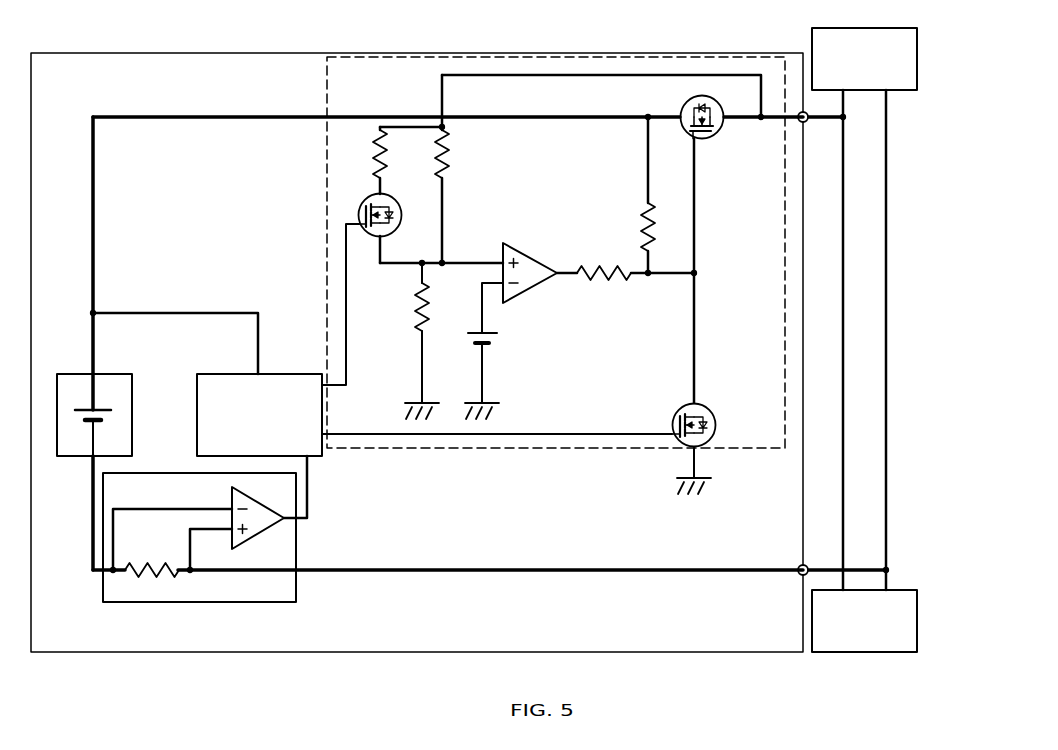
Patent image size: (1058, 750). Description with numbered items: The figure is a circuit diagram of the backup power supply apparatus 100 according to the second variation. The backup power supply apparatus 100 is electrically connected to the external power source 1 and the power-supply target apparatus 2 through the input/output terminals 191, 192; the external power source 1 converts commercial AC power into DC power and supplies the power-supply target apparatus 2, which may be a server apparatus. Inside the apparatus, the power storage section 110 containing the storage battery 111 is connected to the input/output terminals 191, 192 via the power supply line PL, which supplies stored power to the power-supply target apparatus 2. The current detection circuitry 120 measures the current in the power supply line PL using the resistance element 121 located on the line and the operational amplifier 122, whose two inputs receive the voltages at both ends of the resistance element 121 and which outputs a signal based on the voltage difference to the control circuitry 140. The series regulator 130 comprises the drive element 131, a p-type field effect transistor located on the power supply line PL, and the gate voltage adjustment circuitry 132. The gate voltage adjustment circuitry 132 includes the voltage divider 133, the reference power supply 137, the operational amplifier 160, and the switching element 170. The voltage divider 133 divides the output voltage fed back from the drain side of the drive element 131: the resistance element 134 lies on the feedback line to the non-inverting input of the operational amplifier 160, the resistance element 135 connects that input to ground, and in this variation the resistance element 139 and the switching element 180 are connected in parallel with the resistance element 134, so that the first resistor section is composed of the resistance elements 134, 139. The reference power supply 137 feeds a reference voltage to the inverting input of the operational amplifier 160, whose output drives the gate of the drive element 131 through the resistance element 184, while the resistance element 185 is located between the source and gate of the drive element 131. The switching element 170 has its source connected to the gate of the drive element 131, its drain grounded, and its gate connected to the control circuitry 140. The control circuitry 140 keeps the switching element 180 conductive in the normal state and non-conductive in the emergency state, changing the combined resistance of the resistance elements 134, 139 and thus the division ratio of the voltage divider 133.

The external power source 1 is at (918, 56).
The power-supply target apparatus 2 is at (918, 618).
The backup power supply apparatus 100 is at (125, 52).
The power storage section 110 is at (82, 374).
The storage battery 111 is at (90, 408).
The current detection circuitry 120 is at (195, 603).
The resistance element 121 is at (150, 556).
The operational amplifier 122 is at (268, 538).
The series regulator 130 is at (326, 92).
The drive element 131 is at (682, 107).
The gate voltage adjustment circuitry 132 is at (373, 88).
The voltage divider 133 is at (526, 172).
The resistance element 134 is at (449, 155).
The resistance element 135 is at (430, 303).
The reference power supply 137 is at (496, 340).
The resistance element 139 is at (374, 156).
The control circuitry 140 is at (232, 374).
The operational amplifier 160 is at (530, 293).
The switching element 170 is at (717, 427).
The switching element 180 is at (360, 210).
The resistance element 184 is at (600, 282).
The resistance element 185 is at (642, 233).
The input/output terminal 191 is at (807, 123).
The input/output terminal 192 is at (806, 563).
The power supply line PL is at (93, 257).